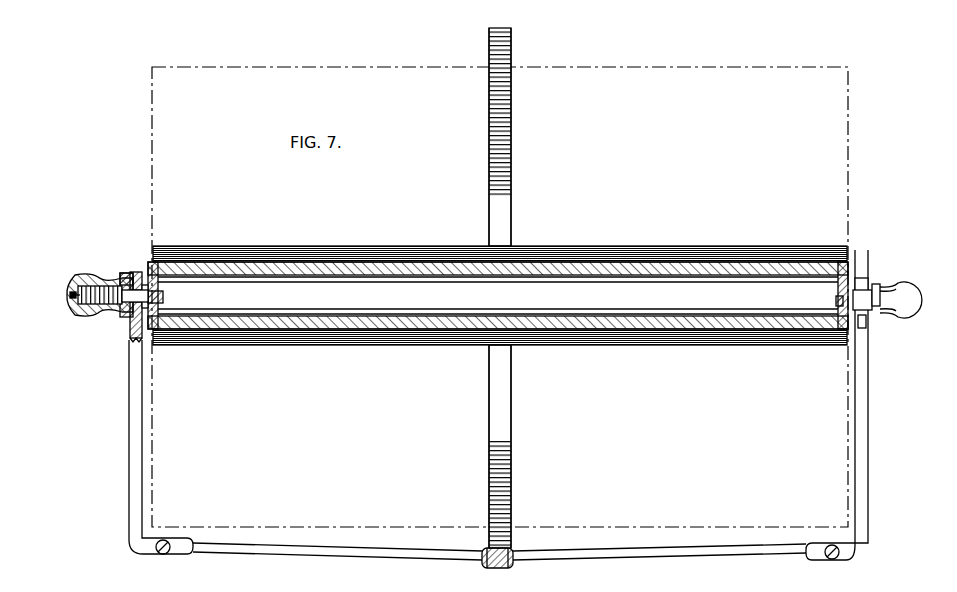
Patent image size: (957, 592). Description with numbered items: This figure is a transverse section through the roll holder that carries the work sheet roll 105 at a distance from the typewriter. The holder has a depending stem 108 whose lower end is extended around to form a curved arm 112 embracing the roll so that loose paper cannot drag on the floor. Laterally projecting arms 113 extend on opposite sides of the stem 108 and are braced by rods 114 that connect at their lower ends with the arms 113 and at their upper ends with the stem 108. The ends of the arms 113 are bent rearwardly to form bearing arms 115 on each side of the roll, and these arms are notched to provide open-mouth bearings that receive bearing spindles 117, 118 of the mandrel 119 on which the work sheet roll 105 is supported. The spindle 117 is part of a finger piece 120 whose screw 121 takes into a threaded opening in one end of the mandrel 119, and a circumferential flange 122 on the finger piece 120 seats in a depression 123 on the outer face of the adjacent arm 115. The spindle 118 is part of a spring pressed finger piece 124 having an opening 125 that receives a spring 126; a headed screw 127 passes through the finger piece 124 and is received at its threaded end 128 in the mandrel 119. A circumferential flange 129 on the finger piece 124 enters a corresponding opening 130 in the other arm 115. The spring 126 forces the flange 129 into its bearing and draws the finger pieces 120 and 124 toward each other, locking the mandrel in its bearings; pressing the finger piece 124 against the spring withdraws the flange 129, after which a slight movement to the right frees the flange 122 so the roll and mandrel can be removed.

The work sheet roll 105 is at (702, 249).
The depending stem 108 is at (500, 561).
The curved arm 112 is at (497, 191).
The laterally projecting arms 113 is at (499, 544).
The rods 114 is at (383, 552).
The bearing arms 115 is at (132, 455).
The bearing spindle 117 is at (861, 292).
The bearing spindle 118 is at (136, 272).
The mandrel 119 is at (225, 331).
The finger piece 120 is at (902, 300).
The screw 121 is at (838, 300).
The circumferential flange 122 is at (873, 287).
The depression 123 is at (865, 326).
The spring pressed finger piece 124 is at (78, 277).
The opening 125 is at (90, 308).
The spring 126 is at (105, 312).
The headed screw 127 is at (80, 296).
The threaded end 128 is at (160, 298).
The circumferential flange 129 is at (126, 280).
The opening 130 is at (131, 268).